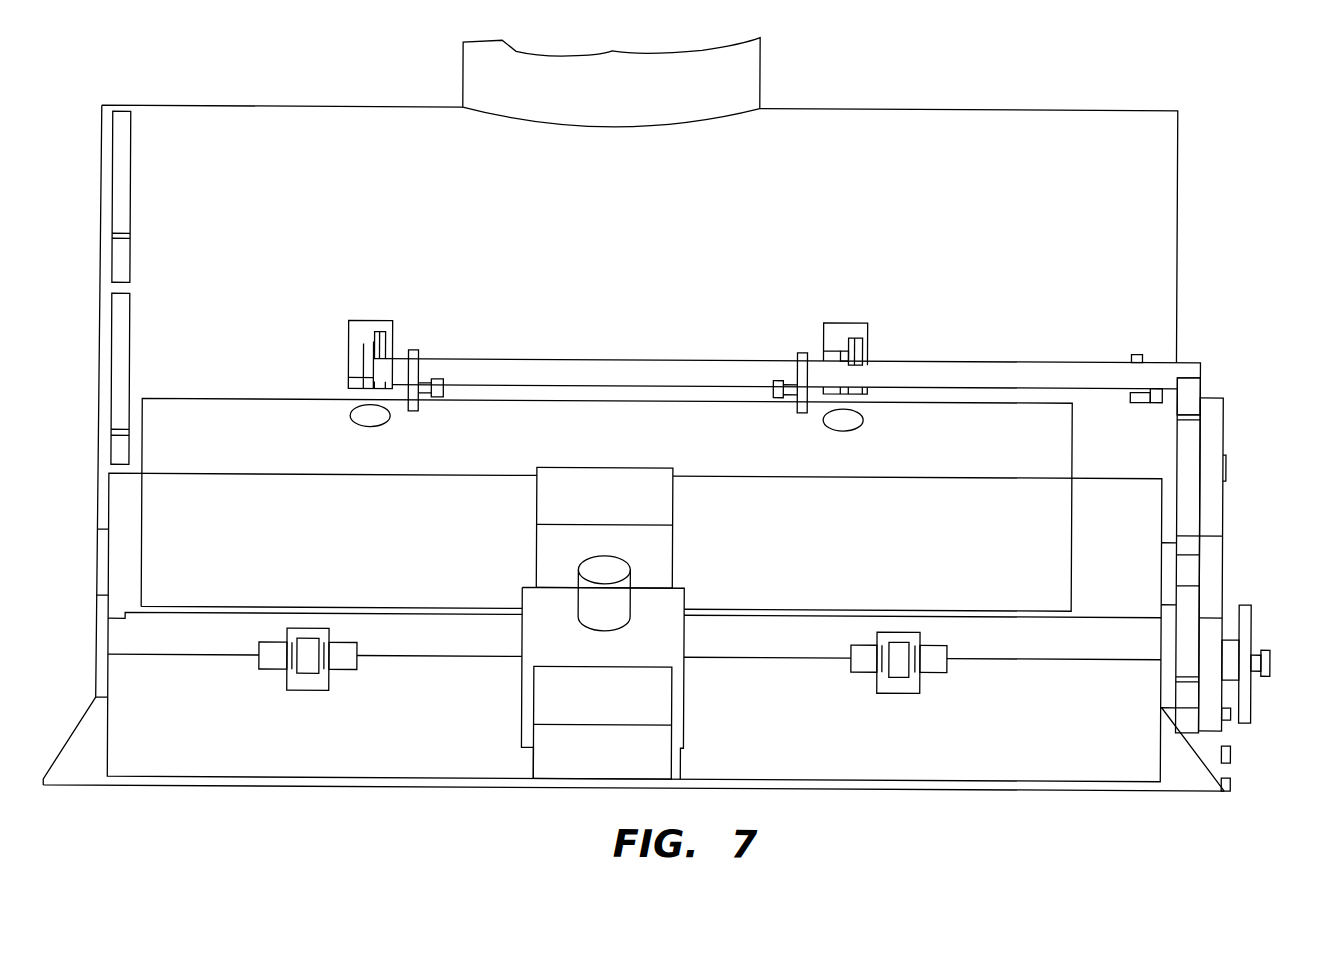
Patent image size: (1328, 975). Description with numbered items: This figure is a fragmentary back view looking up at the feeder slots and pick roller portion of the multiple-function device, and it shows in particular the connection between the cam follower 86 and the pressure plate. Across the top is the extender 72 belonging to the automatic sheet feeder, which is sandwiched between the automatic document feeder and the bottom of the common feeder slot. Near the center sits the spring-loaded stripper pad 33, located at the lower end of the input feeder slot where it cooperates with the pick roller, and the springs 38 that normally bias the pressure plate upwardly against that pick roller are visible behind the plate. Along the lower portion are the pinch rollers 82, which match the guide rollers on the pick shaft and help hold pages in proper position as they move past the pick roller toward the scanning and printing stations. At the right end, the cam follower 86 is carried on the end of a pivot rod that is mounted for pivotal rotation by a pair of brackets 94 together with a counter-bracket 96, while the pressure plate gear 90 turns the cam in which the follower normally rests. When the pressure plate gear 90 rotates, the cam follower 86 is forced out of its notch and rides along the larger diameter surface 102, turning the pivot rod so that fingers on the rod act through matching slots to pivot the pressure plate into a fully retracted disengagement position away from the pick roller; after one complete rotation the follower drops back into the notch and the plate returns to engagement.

The spring-loaded stripper pad 33 is at (702, 574).
The springs 38 is at (350, 422).
The extender 72 is at (722, 82).
The pinch rollers 82 is at (292, 674).
The cam follower 86 is at (1190, 395).
The pressure plate gear 90 is at (1247, 605).
The brackets 94 is at (412, 351).
The counter-bracket 96 is at (798, 410).
The larger diameter surface 102 is at (1232, 722).